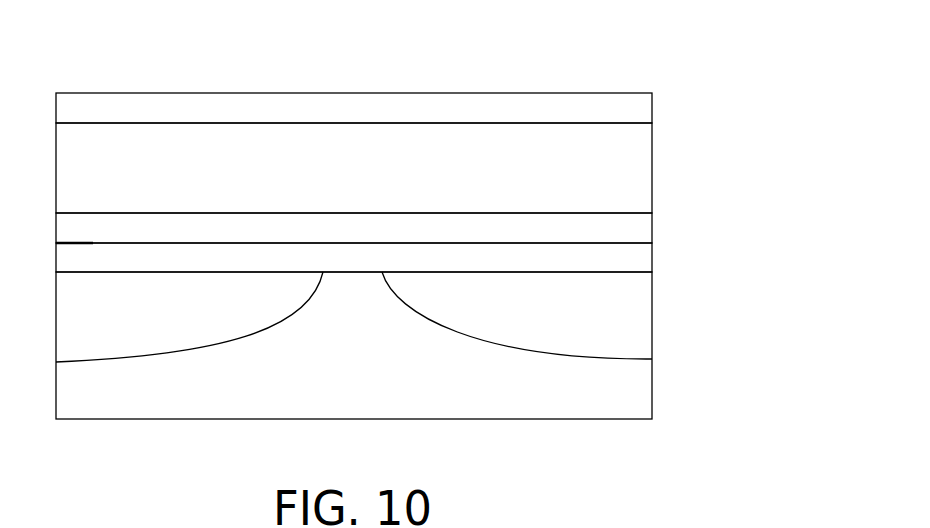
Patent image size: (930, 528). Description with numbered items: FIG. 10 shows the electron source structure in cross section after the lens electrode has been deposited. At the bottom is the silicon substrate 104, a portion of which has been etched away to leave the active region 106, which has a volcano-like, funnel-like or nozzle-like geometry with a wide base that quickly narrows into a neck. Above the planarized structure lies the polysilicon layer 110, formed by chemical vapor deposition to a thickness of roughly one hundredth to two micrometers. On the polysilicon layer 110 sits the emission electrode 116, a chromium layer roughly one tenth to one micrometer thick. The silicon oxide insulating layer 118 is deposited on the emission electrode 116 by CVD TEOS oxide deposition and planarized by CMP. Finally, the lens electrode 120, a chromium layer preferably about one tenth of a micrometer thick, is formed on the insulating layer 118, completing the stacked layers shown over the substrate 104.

The lens electrode 120 is at (294, 93).
The insulating layer 118 is at (652, 149).
The emission electrode 116 is at (652, 222).
The polysilicon layer 110 is at (652, 253).
The substrate 104 is at (633, 397).
The active region 106 is at (353, 307).